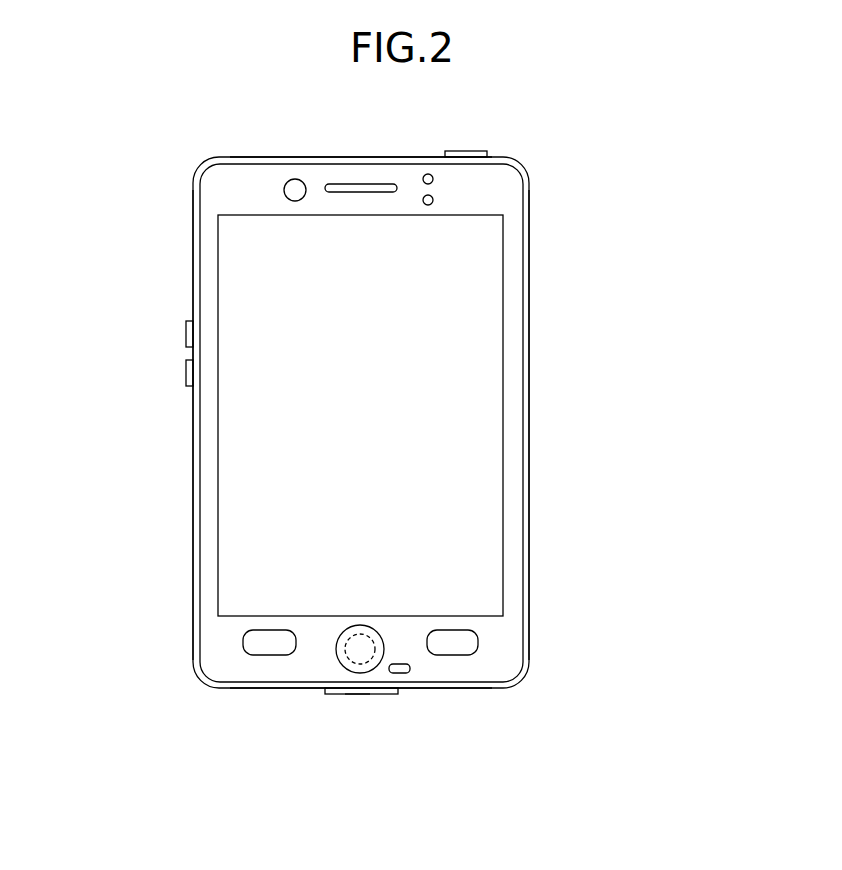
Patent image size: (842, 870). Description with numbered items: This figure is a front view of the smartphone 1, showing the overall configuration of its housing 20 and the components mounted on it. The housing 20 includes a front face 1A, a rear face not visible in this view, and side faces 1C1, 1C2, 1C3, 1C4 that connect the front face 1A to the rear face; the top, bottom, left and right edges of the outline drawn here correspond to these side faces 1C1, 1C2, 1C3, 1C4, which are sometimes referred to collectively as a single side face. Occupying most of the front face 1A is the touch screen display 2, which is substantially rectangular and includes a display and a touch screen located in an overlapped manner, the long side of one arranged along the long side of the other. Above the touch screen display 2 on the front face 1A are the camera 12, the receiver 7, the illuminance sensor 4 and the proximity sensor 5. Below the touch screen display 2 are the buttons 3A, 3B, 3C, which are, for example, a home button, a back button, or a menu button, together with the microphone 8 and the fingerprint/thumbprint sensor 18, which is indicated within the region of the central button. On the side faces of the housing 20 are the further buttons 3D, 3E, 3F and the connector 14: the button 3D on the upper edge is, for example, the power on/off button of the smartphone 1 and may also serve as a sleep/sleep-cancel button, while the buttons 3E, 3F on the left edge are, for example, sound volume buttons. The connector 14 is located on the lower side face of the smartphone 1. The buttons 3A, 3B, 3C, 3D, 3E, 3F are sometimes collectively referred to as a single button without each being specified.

The smartphone 1 is at (512, 128).
The front face 1A is at (209, 482).
The side face 1C1 is at (325, 157).
The side face 1C2 is at (230, 689).
The side face 1C3 is at (193, 552).
The side face 1C4 is at (529, 500).
The touch screen display 2 is at (442, 371).
The button 3A is at (270, 656).
The button 3B is at (338, 645).
The button 3C is at (455, 656).
The button 3D is at (465, 151).
The button 3E is at (186, 333).
The button 3F is at (186, 372).
The illuminance sensor 4 is at (428, 174).
The proximity sensor 5 is at (433, 200).
The receiver 7 is at (359, 184).
The microphone 8 is at (400, 674).
The camera 12 is at (291, 180).
The connector 14 is at (364, 694).
The fingerprint/thumbprint sensor 18 is at (349, 694).
The housing 20 is at (193, 284).